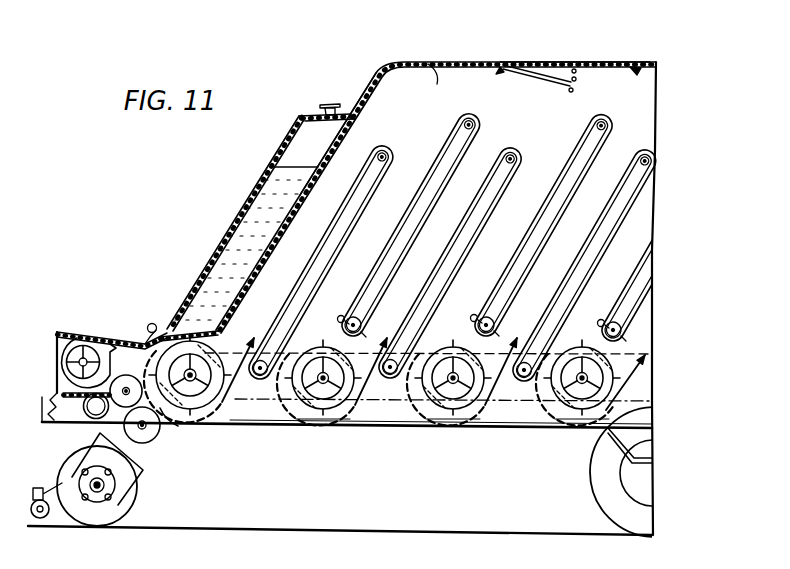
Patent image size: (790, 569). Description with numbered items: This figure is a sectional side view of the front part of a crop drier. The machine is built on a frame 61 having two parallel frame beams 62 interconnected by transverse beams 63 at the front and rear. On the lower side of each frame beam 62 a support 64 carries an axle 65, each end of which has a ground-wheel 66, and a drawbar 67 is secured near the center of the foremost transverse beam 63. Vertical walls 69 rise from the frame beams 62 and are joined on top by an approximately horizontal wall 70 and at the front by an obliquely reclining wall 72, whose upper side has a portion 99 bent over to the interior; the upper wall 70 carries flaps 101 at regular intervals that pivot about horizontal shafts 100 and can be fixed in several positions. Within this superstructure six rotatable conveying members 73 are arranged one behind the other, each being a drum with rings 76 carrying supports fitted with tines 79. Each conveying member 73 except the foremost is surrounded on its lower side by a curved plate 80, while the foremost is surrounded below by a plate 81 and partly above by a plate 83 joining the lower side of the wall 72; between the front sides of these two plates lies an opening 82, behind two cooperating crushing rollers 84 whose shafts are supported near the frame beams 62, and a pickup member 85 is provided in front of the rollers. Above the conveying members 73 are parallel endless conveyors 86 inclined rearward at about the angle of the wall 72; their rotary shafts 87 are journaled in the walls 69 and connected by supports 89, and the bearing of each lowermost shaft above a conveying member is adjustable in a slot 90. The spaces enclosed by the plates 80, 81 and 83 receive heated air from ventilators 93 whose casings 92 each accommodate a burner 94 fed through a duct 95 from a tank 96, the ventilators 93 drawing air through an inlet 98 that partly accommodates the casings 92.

The frame 61 is at (505, 430).
The frame beams 62 is at (530, 430).
The transverse beams 63 is at (88, 417).
The support 64 is at (618, 440).
The axle 65 is at (633, 492).
The ground-wheel 66 is at (603, 512).
The drawbar 67 is at (58, 414).
The vertical walls 69 is at (615, 70).
The horizontal wall 70 is at (491, 62).
The obliquely reclining wall 72 is at (381, 80).
The rotatable conveying members 73 is at (590, 345).
The rings 76 is at (453, 345).
The tines 79 is at (316, 340).
The curved plate 80 is at (305, 413).
The plate 81 is at (232, 406).
The opening 82 is at (176, 422).
The plate 83 is at (165, 326).
The crushing rollers 84 is at (157, 443).
The pickup member 85 is at (115, 512).
The endless conveyors 86 is at (345, 250).
The rotary shafts 87 is at (386, 153).
The supports 89 is at (470, 238).
The slot 90 is at (497, 330).
The casings 92 is at (72, 332).
The ventilators 93 is at (90, 340).
The burner 94 is at (114, 338).
The duct 95 is at (151, 322).
The tank 96 is at (240, 228).
The inlet 98 is at (58, 384).
The portion 99 is at (442, 83).
The horizontal shafts 100 is at (500, 70).
The flaps 101 is at (566, 84).